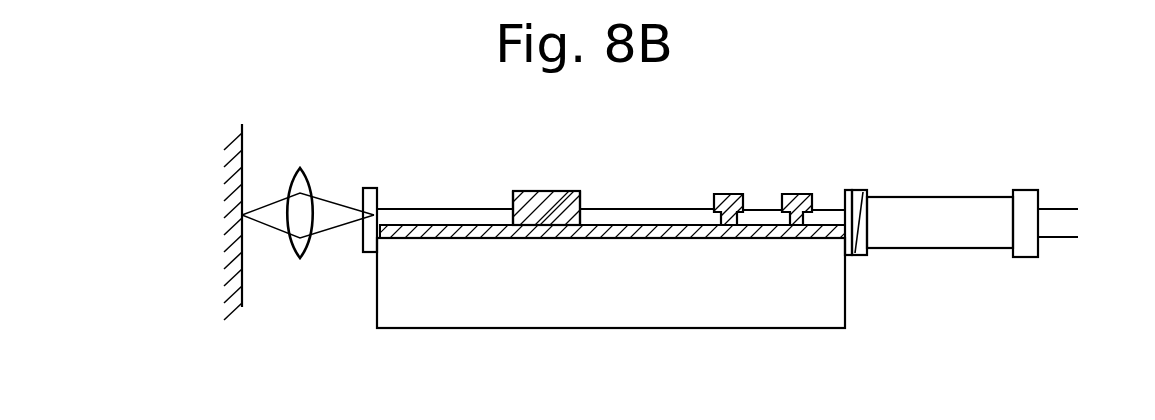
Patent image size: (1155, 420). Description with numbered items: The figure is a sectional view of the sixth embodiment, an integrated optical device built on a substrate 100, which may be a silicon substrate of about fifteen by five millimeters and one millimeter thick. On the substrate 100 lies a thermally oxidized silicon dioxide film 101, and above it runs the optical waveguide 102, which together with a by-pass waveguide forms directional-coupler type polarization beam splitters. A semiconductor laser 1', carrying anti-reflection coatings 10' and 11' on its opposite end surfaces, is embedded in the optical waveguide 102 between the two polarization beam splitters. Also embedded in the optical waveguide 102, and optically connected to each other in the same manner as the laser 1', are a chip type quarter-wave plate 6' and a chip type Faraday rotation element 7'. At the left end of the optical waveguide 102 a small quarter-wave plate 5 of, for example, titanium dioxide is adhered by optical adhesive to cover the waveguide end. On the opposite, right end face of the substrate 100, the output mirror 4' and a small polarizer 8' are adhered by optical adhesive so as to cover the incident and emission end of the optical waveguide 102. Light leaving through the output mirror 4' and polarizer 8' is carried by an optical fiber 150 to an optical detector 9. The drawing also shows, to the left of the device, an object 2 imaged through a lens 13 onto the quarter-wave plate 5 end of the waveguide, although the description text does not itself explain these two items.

The object / target wall 2 is at (243, 160).
The lens 13 is at (299, 259).
The optical element 5 is at (372, 188).
The optical waveguide 102 is at (432, 212).
The anti-reflection coating 10' is at (496, 175).
The semiconductor laser 1' is at (547, 171).
The anti-reflection coating 11' is at (597, 175).
The chip type λ/4 plate 6' is at (738, 174).
The chip type Faraday rotation element 7' is at (806, 174).
The output mirror 4' is at (839, 189).
The polarizer 8' is at (872, 189).
The optical detector 9 is at (1027, 190).
The optical fiber 150 is at (966, 249).
The substrate 100 is at (512, 310).
The thermally oxidized SiO₂ film 101 is at (756, 239).